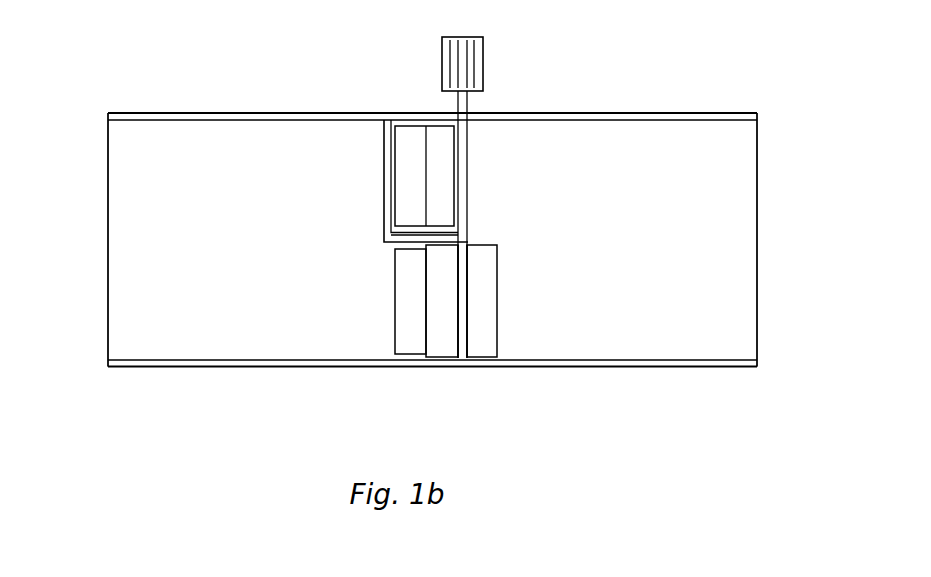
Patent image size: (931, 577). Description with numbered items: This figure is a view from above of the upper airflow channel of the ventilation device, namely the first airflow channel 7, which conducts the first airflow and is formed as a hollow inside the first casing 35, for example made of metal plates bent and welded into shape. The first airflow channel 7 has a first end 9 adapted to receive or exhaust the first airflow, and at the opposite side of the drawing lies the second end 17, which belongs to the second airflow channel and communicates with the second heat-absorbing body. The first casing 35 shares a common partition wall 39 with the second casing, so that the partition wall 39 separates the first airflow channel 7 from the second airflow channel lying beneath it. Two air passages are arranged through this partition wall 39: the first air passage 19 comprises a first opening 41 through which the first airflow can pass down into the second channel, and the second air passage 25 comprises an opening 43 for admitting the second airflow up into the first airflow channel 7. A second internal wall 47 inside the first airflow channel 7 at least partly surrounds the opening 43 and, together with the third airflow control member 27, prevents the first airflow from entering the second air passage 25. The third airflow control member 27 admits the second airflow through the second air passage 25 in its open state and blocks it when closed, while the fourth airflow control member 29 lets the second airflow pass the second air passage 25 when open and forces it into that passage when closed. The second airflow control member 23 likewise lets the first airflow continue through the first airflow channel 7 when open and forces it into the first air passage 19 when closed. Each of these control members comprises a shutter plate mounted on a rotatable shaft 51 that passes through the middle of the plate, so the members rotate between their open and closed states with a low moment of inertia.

The first airflow channel 7 is at (230, 250).
The first end 9 is at (127, 318).
The second end 17 is at (735, 307).
The first casing 35 is at (645, 117).
The partition wall 39 is at (218, 328).
The fourth airflow control member 29 is at (440, 155).
The third airflow control member 27 is at (462, 137).
The second internal wall 47 is at (387, 154).
The second air passage 25 is at (407, 165).
The opening 43 is at (415, 143).
The first air passage 19 is at (407, 298).
The first opening 41 is at (408, 333).
The rotatable shaft 51 is at (462, 320).
The second airflow control member 23 is at (482, 330).